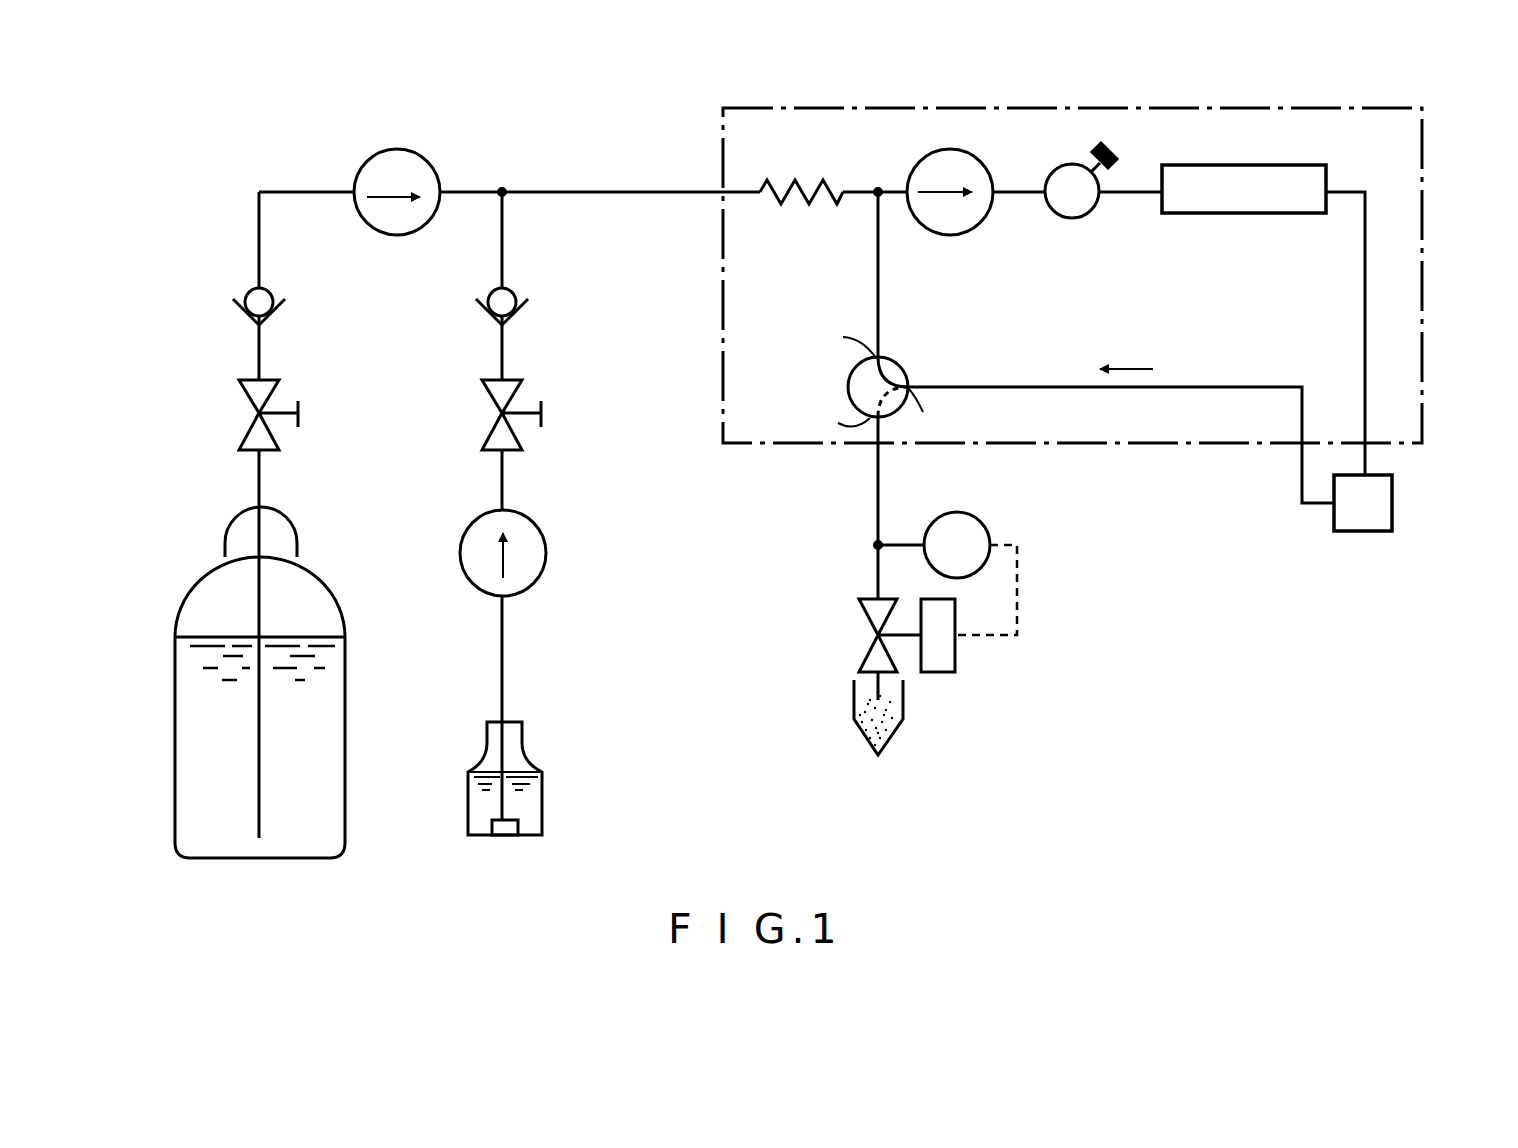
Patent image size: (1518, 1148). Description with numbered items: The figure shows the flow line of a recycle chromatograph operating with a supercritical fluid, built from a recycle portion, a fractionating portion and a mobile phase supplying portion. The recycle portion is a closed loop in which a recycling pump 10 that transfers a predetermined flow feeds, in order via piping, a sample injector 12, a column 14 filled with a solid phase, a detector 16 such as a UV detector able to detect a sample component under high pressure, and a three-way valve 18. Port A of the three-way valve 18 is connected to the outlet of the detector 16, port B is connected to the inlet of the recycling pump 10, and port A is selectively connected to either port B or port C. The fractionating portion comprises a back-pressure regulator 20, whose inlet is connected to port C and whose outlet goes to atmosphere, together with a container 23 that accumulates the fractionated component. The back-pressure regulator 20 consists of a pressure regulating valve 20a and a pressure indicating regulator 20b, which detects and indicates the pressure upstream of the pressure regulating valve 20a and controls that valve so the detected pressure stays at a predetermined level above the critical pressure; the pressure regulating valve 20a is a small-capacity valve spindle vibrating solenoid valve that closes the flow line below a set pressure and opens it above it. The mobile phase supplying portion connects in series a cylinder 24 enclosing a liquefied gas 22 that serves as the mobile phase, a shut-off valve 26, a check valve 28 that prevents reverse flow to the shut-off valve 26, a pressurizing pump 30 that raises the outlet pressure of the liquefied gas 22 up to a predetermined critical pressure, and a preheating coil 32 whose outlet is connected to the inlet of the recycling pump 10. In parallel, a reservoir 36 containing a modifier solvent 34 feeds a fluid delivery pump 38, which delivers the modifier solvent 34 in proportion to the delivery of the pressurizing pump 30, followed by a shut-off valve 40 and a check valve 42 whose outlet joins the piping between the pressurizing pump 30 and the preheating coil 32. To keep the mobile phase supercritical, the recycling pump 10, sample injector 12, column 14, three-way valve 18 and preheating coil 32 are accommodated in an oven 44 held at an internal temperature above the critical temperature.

The recycling pump 10 is at (962, 233).
The sample injector 12 is at (1060, 216).
The column 14 is at (1247, 213).
The detector 16 is at (1362, 531).
The three-way valve 18 is at (901, 367).
The back-pressure regulator 20 is at (940, 597).
The pressure regulating valve 20a is at (862, 612).
The pressure indicating regulator 20b is at (990, 522).
The liquefied gas 22 is at (287, 637).
The container 23 is at (903, 702).
The cylinder 24 is at (348, 680).
The shut-off valve 26 is at (244, 441).
The check valve 28 is at (243, 318).
The pressurizing pump 30 is at (413, 157).
The preheating coil 32 is at (812, 200).
The modifier solvent 34 is at (518, 768).
The reservoir 36 is at (542, 783).
The fluid delivery pump 38 is at (547, 562).
The shut-off valve 40 is at (491, 403).
The check valve 42 is at (487, 318).
The oven 44 is at (1098, 445).